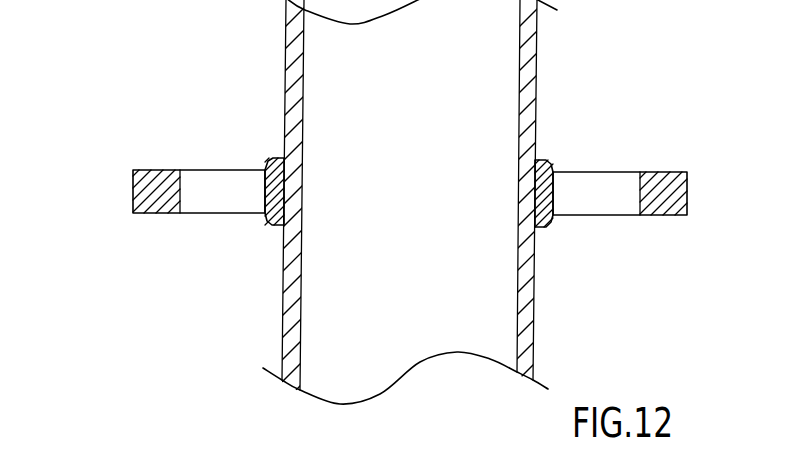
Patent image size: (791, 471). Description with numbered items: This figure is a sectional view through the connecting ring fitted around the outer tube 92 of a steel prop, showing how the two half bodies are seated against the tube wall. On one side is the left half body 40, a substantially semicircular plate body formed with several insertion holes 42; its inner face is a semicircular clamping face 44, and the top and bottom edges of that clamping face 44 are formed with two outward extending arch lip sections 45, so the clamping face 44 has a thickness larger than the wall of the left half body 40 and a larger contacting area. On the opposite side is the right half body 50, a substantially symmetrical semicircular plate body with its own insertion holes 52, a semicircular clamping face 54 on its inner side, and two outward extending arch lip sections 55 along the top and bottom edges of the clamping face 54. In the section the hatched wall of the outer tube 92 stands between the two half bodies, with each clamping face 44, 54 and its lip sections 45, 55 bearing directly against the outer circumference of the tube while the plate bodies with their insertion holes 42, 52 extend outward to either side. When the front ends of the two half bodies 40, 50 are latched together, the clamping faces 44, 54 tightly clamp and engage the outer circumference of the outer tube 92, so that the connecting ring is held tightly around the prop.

The left half body 40 is at (662, 186).
The insertion holes 42 is at (612, 205).
The clamping face 44 is at (553, 190).
The arch lip sections 45 is at (545, 162).
The right half body 50 is at (157, 192).
The insertion holes 52 is at (205, 203).
The clamping face 54 is at (260, 217).
The arch lip sections 55 is at (277, 160).
The outer tube 92 is at (534, 311).